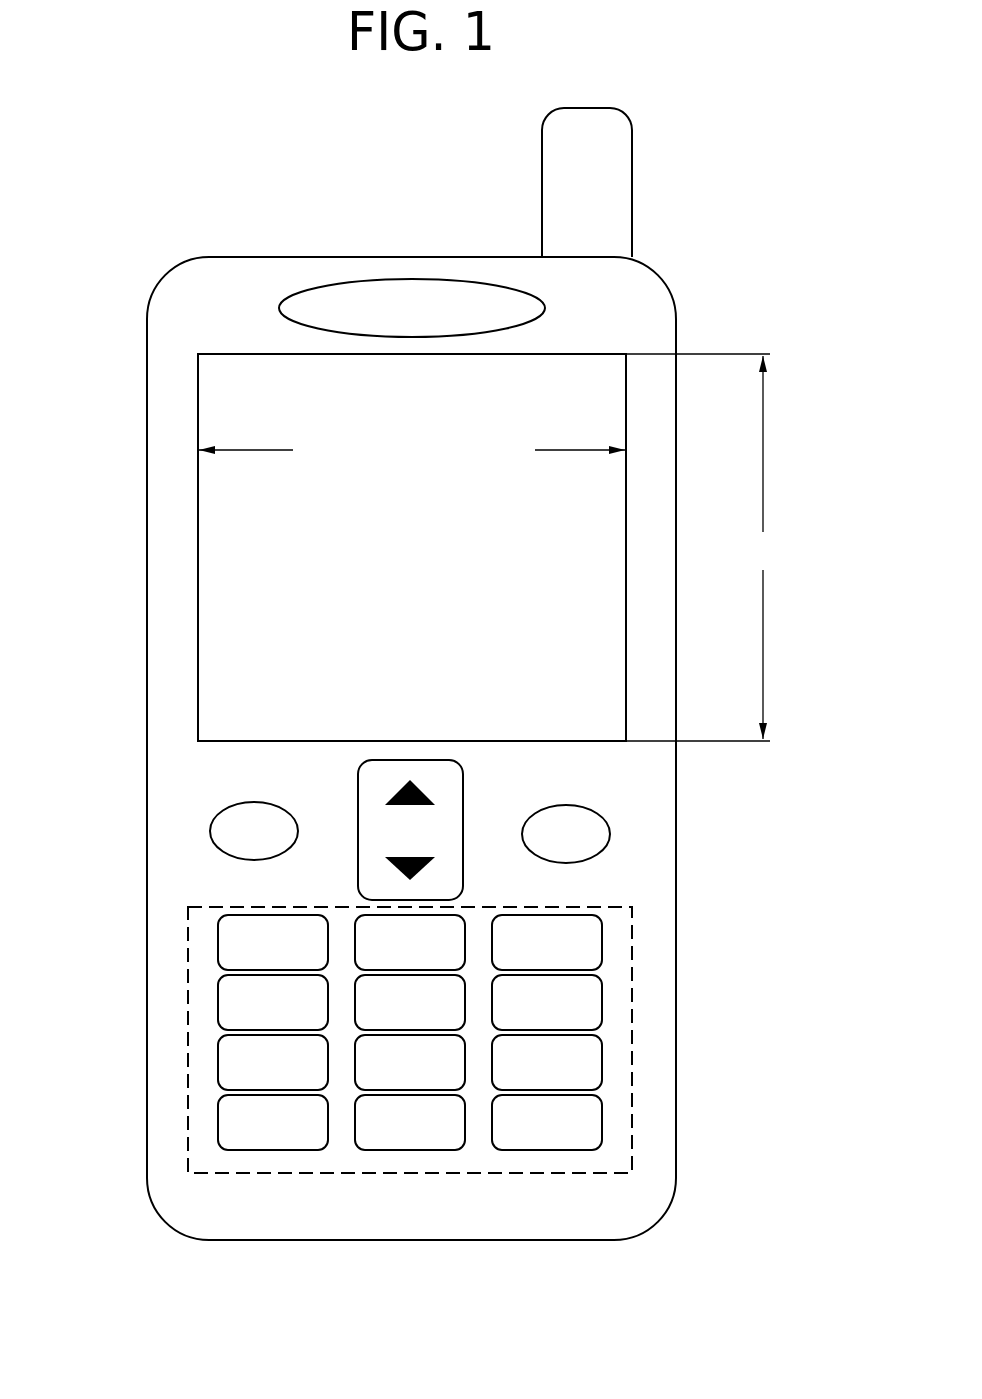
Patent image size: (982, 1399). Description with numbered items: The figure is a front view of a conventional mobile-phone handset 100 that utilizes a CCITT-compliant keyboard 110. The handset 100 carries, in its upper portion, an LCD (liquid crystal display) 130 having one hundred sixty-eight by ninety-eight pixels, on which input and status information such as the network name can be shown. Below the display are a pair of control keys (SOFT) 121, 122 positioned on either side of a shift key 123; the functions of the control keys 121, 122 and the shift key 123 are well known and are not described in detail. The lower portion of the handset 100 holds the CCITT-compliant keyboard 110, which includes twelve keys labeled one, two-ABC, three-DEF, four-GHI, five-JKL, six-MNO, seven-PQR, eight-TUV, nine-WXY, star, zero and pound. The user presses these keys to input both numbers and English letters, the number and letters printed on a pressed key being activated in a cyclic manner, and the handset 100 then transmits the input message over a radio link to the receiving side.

The mobile-phone handset 100 is at (780, 97).
The CCITT-compliant keyboard 110 is at (632, 1030).
The control key (SOFT) 121 is at (210, 830).
The control key (SOFT) 122 is at (610, 832).
The shift key 123 is at (463, 787).
The LCD (liquid crystal display) 130 is at (198, 562).